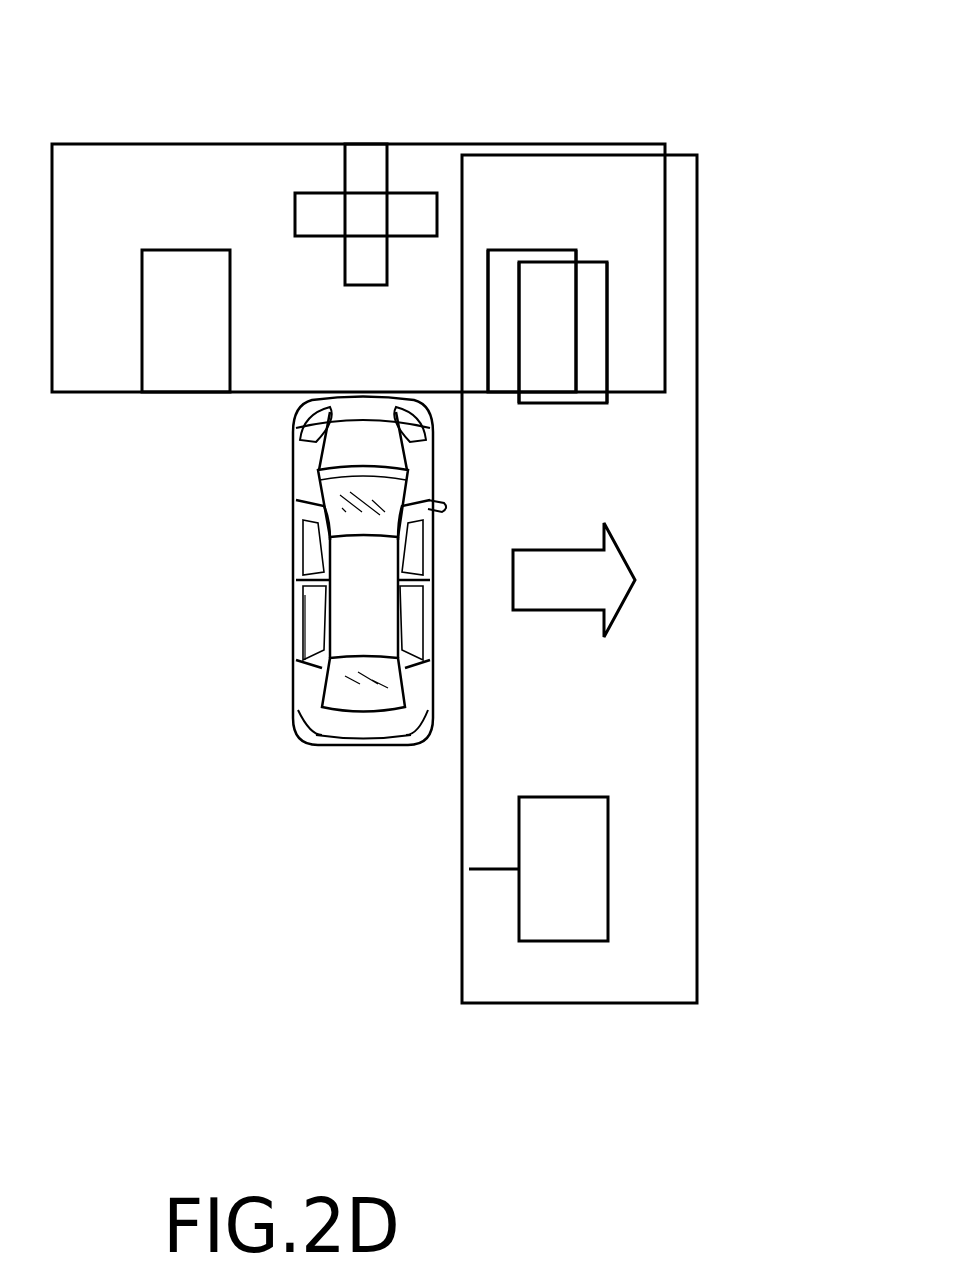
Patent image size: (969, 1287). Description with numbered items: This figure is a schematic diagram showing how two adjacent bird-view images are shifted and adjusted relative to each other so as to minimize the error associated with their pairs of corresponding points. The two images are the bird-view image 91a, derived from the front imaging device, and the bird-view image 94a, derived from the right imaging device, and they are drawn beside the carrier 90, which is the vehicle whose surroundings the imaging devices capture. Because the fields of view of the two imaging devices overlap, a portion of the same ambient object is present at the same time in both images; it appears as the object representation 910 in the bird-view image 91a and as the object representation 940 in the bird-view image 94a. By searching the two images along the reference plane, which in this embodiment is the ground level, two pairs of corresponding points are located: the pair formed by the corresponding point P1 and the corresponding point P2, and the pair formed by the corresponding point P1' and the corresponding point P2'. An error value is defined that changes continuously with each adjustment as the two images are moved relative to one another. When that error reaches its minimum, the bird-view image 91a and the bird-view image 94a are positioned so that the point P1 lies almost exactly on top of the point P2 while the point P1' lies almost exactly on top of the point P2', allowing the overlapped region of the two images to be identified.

The bird-view image 91a is at (185, 96).
The bird-view image 94a is at (422, 958).
The carrier 90 is at (248, 606).
The figure 940 is at (590, 326).
The figure 910 is at (549, 360).
The corresponding point P1 is at (461, 214).
The corresponding point P1' is at (517, 234).
The corresponding point P2 is at (596, 214).
The corresponding point P2' is at (662, 230).